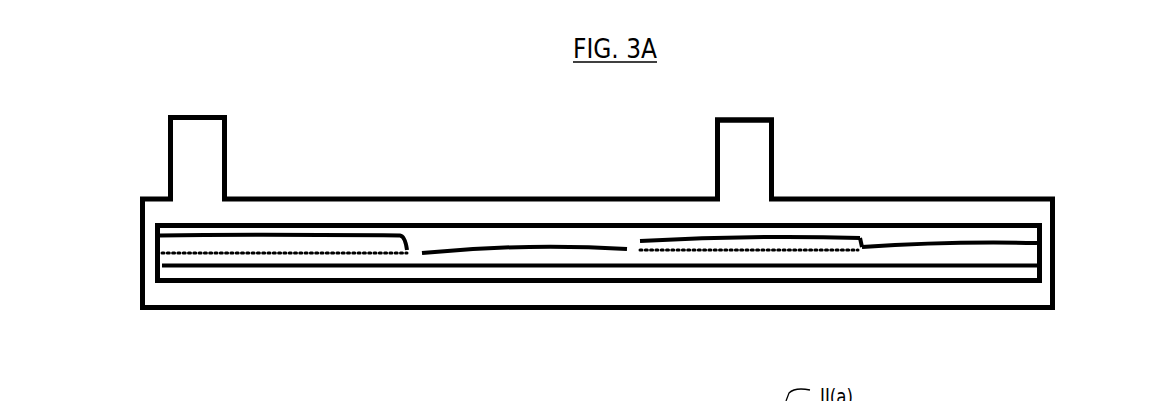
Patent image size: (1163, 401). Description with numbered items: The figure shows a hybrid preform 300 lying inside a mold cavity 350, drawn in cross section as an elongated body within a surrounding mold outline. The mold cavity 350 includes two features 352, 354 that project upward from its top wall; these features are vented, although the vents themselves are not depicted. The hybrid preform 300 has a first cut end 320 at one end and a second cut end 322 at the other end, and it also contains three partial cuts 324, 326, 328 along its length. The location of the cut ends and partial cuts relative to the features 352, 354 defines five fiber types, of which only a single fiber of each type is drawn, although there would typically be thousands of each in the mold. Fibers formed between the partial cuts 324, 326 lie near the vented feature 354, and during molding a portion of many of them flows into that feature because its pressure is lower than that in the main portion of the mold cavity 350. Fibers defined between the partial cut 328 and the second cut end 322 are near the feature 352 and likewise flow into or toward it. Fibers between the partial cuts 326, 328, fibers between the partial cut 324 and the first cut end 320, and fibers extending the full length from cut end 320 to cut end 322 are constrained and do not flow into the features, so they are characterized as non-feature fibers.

The hybrid preform 300 is at (923, 217).
The first cut end 320 is at (1042, 255).
The second cut end 322 is at (157, 258).
The partial cut 324 is at (858, 250).
The partial cut 326 is at (640, 250).
The partial cut 328 is at (407, 248).
The mold cavity 350 is at (1055, 240).
The feature 352 is at (212, 168).
The feature 354 is at (762, 155).